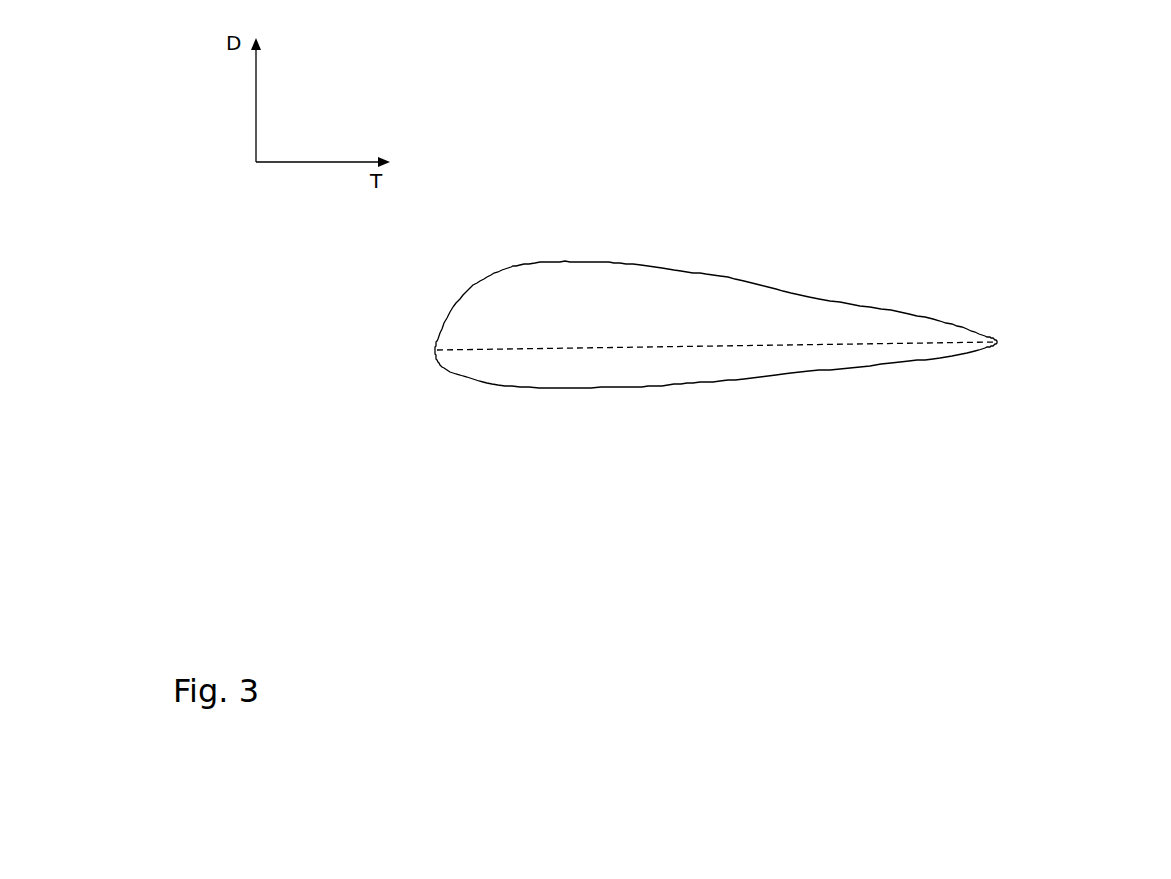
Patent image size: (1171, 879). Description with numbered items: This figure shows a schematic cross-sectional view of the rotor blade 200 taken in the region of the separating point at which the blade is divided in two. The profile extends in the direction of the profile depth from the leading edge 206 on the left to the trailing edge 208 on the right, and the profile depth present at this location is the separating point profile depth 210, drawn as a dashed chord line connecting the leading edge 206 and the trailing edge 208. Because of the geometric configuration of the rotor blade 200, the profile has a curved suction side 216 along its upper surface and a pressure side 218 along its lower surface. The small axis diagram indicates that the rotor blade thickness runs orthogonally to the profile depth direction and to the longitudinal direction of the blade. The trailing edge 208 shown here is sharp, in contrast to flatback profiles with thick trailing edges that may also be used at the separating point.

The rotor blade 200 is at (1016, 147).
The leading edge 206 is at (426, 350).
The trailing edge 208 is at (1010, 343).
The separating point profile depth 210 is at (716, 347).
The suction side 216 is at (637, 250).
The pressure side 218 is at (716, 397).